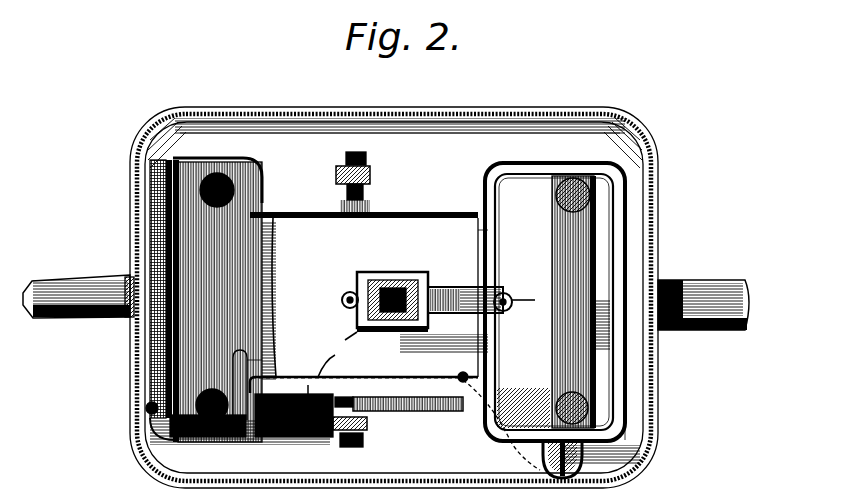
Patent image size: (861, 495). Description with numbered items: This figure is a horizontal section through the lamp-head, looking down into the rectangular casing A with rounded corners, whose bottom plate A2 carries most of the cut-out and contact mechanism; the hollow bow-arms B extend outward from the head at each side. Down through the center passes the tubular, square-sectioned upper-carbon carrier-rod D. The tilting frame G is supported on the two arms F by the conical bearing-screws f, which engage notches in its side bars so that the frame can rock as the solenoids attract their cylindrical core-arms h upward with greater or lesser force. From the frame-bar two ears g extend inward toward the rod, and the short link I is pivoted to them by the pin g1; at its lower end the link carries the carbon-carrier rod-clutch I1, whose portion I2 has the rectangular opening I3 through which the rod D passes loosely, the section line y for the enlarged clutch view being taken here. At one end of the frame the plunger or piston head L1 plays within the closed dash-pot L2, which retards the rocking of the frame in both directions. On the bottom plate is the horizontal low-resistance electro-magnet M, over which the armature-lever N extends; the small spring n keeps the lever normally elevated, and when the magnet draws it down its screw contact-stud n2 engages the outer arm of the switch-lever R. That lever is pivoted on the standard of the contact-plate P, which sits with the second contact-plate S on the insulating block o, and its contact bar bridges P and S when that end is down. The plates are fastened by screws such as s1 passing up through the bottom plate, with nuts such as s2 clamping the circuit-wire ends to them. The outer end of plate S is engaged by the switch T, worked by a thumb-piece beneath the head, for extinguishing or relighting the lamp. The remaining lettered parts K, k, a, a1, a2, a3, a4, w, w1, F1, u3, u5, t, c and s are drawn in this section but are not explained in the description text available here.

The casing of lamp-head A is at (660, 200).
The bottom plate of the head A2 is at (400, 146).
The hollow bow-arm B is at (386, 303).
The low-resistance electro-magnet M is at (142, 348).
The spring n is at (132, 426).
The screw contact-stud n2 is at (160, 430).
The left coil K is at (224, 300).
The lever N is at (211, 272).
The coil end k is at (211, 375).
The cylindrical arm h is at (234, 195).
The yoke bar a is at (333, 218).
The yoke extension a1 is at (480, 237).
The arm a2 is at (534, 299).
The arm a3 is at (606, 302).
The bracket loop a4 is at (244, 383).
The wire w is at (261, 359).
The wire rod w1 is at (283, 297).
The bearing-screw f is at (354, 298).
The arm F is at (352, 447).
The binding post nut F1 is at (371, 175).
The short link I is at (434, 284).
The carbon-carrier rod-clutch I1 is at (416, 280).
The clutch portion I2 is at (360, 292).
The rectangular opening I3 is at (395, 276).
The ear g is at (460, 287).
The section line y is at (341, 300).
The upper-carbon carrier-rod D is at (394, 332).
The wire u3 is at (328, 358).
The wire u5 is at (662, 270).
The piston head or plunger L1 is at (554, 302).
The dash-pot L2 is at (552, 320).
The switch-lever R is at (574, 302).
The stop t is at (572, 399).
The switch T is at (520, 446).
The screw c is at (648, 404).
The tilting frame G is at (458, 380).
The insulating block or plate o is at (285, 437).
The contact-plate P is at (236, 438).
The contact-plate S is at (332, 432).
The spring s is at (420, 412).
The screw s1 is at (340, 393).
The nut s2 is at (342, 405).
The pin g1 is at (308, 390).